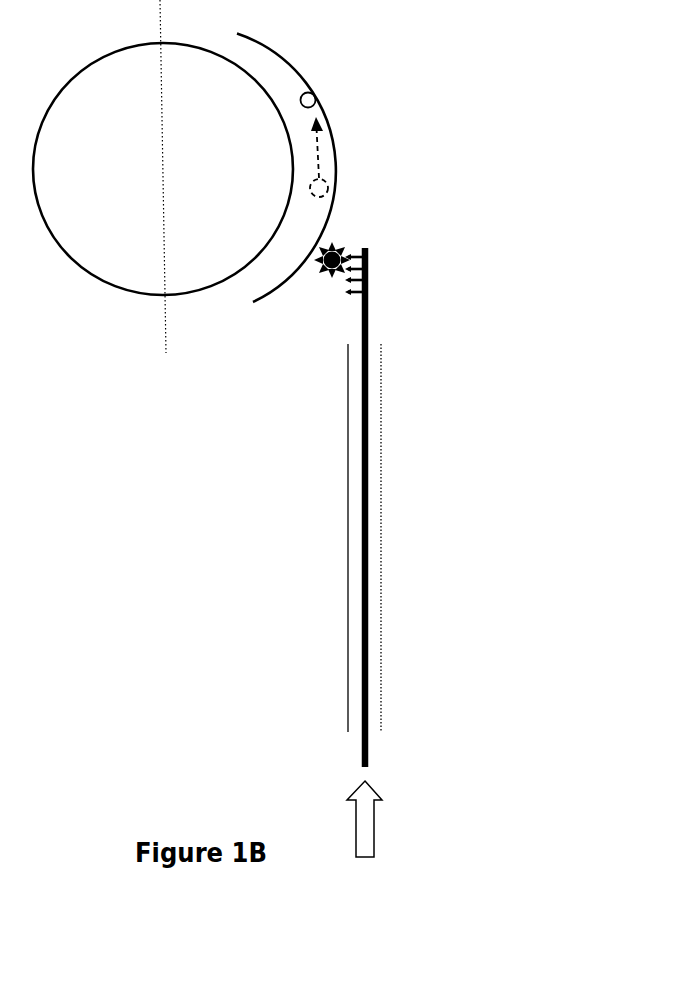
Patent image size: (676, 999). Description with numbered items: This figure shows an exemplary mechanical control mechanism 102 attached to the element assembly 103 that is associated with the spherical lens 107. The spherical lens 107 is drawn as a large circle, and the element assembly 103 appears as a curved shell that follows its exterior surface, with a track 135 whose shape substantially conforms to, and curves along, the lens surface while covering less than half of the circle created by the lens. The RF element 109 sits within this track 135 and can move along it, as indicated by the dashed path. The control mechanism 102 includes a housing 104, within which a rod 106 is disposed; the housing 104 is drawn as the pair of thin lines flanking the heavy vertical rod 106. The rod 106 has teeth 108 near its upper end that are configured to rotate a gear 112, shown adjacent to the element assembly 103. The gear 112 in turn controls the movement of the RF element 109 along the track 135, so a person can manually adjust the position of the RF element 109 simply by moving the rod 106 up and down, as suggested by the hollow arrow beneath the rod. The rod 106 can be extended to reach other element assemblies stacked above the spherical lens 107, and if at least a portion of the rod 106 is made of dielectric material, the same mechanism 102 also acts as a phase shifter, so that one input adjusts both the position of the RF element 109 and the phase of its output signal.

The mechanical control mechanism 102 is at (510, 286).
The element assembly 103 is at (303, 44).
The housing 104 is at (348, 568).
The rod 106 is at (368, 305).
The spherical lens 107 is at (85, 270).
The teeth 108 is at (347, 292).
The RF element 109 is at (302, 93).
The gear 112 is at (344, 243).
The track 135 is at (337, 145).